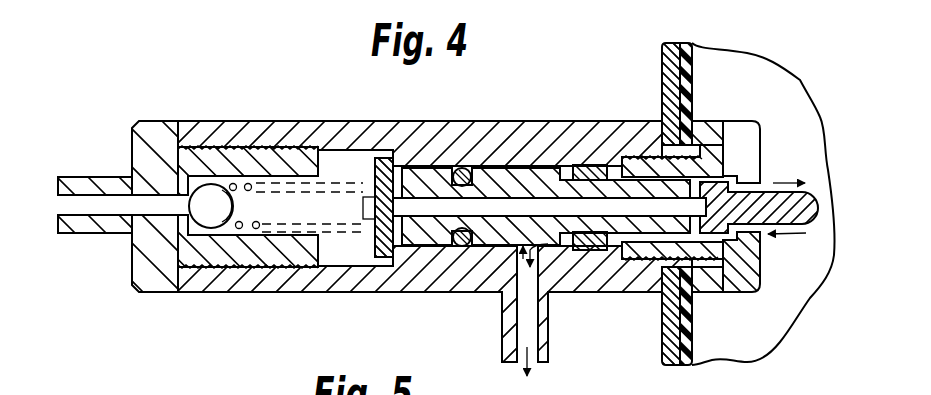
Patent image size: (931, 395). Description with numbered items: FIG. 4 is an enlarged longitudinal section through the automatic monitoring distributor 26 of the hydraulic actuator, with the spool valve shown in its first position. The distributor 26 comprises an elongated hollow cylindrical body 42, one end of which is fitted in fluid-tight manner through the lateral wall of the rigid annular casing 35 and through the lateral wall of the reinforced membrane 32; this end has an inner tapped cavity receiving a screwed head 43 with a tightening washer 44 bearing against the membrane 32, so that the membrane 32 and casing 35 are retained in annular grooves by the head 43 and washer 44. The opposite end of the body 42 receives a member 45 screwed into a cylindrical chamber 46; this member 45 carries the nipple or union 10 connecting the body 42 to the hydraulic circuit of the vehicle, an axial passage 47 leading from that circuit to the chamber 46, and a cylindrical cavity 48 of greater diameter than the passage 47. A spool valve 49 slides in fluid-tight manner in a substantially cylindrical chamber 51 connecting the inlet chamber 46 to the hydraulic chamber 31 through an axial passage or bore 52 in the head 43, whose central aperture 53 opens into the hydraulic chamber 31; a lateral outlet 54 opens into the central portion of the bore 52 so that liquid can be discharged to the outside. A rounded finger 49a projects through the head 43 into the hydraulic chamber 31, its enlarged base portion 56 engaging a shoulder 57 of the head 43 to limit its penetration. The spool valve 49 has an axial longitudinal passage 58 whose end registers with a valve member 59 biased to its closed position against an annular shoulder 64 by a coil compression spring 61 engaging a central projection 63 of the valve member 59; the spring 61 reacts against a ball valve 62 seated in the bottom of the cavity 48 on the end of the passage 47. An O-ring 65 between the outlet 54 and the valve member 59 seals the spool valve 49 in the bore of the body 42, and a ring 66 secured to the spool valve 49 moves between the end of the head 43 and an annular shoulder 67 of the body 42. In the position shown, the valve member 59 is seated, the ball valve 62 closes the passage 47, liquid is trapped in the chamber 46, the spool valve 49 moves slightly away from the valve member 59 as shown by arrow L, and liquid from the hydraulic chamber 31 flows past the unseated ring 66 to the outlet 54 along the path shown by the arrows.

The nipple or union 10 is at (92, 234).
The distributor 26 is at (304, 104).
The hydraulic chamber 31 is at (796, 246).
The reinforced membrane 32 is at (693, 79).
The rigid annular casing 35 is at (662, 70).
The hollow body 42 is at (508, 161).
The head 43 is at (766, 152).
The tightening washer 44 is at (703, 293).
The member 45 is at (152, 273).
The cylindrical chamber 46 is at (348, 256).
The axial passage 47 is at (95, 206).
The cylindrical cavity 48 is at (286, 210).
The spool valve 49 is at (512, 248).
The finger 49a is at (764, 240).
The cylindrical chamber 51 is at (536, 166).
The axial passage 52 is at (668, 275).
The central aperture 53 is at (755, 184).
The lateral outlet 54 is at (503, 348).
The enlarged base portion 56 is at (731, 150).
The shoulder 57 is at (745, 172).
The axial longitudinal passage 58 is at (486, 214).
The valve member 59 is at (376, 160).
The coil compression spring 61 is at (239, 230).
The ball valve 62 is at (209, 195).
The central projection 63 is at (363, 207).
The annular shoulder 64 is at (395, 168).
The O-ring 65 is at (466, 170).
The ring 66 is at (608, 160).
The annular shoulder 67 is at (556, 165).
The arrow L is at (799, 183).